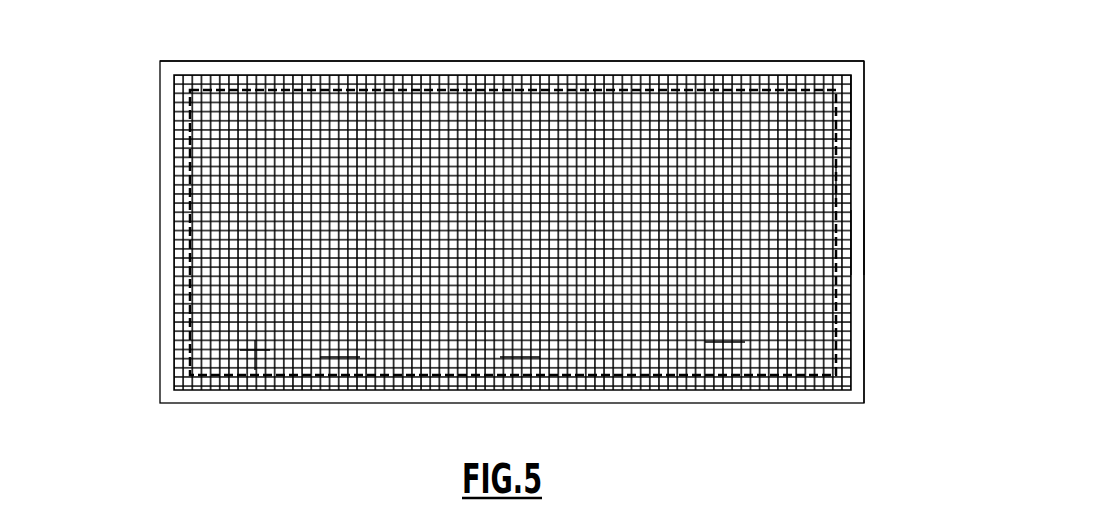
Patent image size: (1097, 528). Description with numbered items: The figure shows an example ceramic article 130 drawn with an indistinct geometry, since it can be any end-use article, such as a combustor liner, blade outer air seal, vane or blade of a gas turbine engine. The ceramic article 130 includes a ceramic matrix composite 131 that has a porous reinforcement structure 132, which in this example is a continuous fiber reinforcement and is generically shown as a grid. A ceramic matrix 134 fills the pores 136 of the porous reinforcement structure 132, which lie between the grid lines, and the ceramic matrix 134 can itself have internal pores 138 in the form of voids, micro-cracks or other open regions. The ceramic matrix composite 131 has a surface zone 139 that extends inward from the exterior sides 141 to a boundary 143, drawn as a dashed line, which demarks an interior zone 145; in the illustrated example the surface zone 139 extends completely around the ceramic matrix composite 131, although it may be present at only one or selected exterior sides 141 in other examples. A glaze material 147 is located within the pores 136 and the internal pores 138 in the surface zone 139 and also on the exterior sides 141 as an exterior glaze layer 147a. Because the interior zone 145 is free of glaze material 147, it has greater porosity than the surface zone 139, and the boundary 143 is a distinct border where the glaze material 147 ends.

The ceramic article 130 is at (134, 313).
The ceramic matrix composite 131 is at (251, 362).
The porous reinforcement structure 132 is at (517, 360).
The ceramic matrix 134 is at (725, 343).
The pores 136 is at (780, 325).
The internal pores 138 is at (340, 360).
The surface zone 139 is at (851, 181).
The exterior sides 141 is at (713, 62).
The boundary 143 is at (840, 107).
The interior zone 145 is at (585, 143).
The glaze material 147 is at (842, 262).
The exterior glaze layer 147a is at (865, 348).